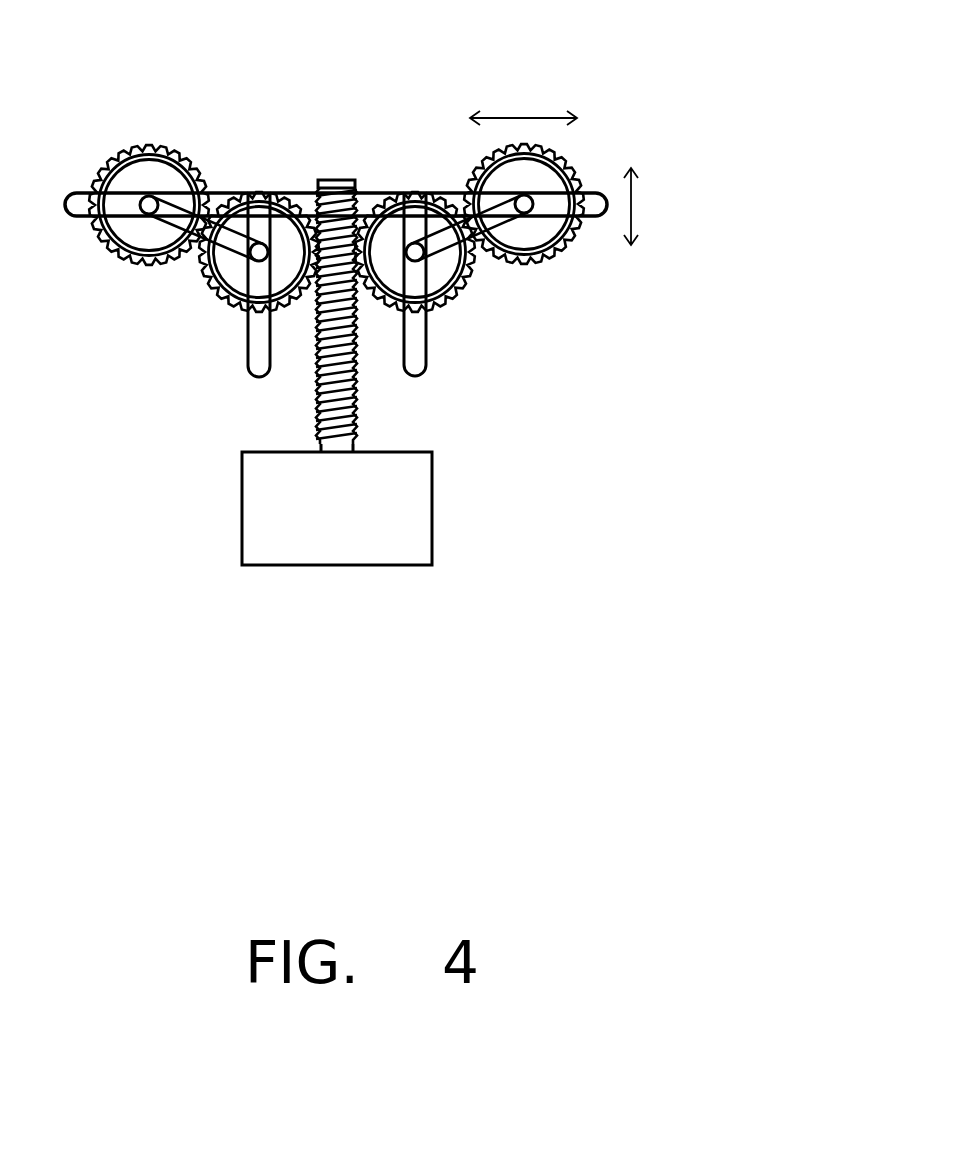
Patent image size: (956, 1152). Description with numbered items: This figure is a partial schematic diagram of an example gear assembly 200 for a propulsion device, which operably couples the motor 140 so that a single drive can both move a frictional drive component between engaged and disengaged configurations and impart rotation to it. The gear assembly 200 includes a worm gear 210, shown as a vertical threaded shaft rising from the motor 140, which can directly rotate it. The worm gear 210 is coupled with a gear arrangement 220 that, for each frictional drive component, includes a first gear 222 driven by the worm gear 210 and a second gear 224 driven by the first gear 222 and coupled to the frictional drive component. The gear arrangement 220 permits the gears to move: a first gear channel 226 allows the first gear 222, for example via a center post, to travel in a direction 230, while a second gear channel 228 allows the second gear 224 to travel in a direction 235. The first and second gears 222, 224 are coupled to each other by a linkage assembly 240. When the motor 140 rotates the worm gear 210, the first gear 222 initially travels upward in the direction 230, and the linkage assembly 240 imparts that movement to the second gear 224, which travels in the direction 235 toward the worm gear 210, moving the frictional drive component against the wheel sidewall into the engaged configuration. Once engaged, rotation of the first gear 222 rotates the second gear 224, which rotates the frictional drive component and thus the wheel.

The gear assembly 200 is at (400, 90).
The worm gear 210 is at (337, 185).
The gear arrangement 220 is at (727, 142).
The first gear 222 is at (381, 226).
The second gear 224 is at (533, 262).
The first gear channel 226 is at (412, 375).
The second gear channel 228 is at (592, 192).
The direction 230 is at (661, 206).
The direction 235 is at (523, 100).
The linkage assembly 240 is at (435, 256).
The motor 140 is at (337, 508).